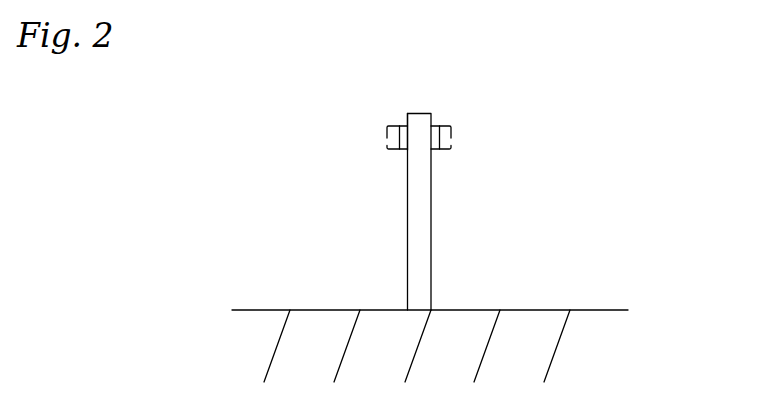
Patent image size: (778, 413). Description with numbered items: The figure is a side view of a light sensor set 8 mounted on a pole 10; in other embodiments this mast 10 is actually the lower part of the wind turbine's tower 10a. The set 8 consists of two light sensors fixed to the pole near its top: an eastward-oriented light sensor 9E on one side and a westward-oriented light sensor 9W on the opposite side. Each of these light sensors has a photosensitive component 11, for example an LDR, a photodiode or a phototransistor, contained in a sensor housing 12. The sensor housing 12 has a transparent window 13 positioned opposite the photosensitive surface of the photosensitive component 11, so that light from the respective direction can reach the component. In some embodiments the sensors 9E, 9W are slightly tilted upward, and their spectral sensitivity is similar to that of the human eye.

The light sensor set 8 is at (437, 179).
The eastward-oriented light sensor 9E is at (398, 152).
The westward-oriented light sensor 9W is at (438, 152).
The pole 10 is at (470, 212).
The wind turbine's tower 10a is at (422, 230).
The photosensitive component 11 is at (404, 126).
The sensor housing 12 is at (389, 125).
The transparent window 13 is at (455, 138).